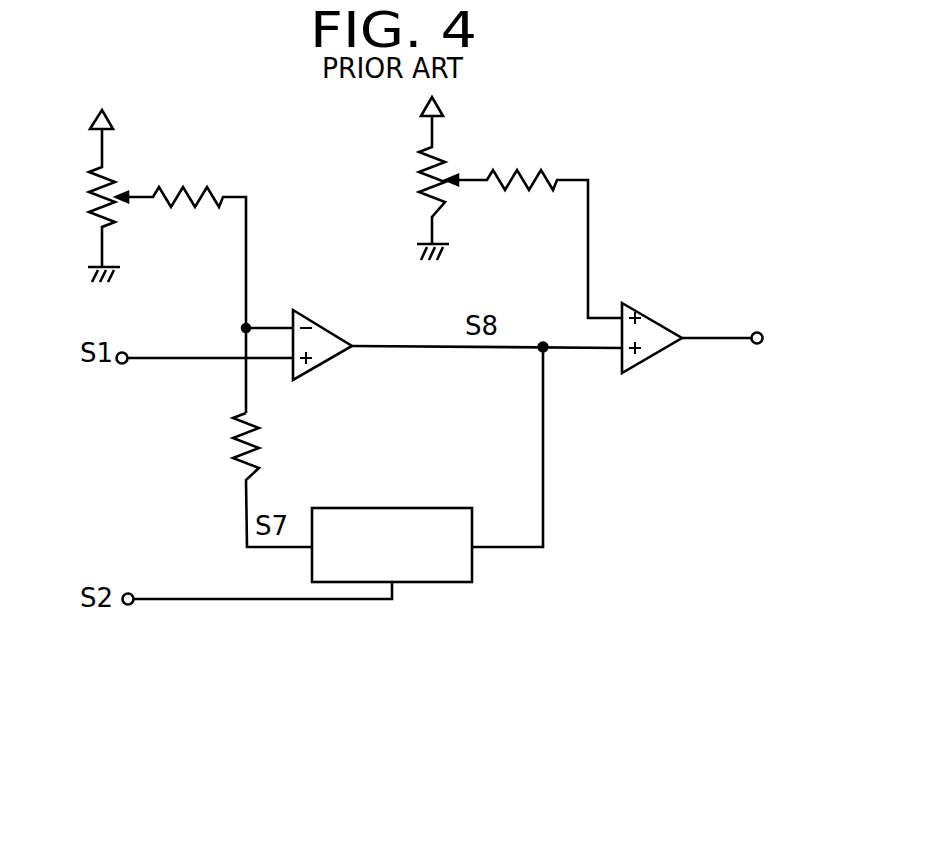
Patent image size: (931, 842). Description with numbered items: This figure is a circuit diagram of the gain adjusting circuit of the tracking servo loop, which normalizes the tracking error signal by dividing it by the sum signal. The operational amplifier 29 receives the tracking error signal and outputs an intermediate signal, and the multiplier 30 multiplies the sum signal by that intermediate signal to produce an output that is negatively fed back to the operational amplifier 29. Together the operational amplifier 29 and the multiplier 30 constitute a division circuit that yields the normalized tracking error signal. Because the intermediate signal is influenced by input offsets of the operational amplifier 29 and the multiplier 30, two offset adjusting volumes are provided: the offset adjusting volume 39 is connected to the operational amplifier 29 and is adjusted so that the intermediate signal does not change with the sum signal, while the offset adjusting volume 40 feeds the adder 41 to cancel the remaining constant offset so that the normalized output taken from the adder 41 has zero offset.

The operational amplifier 29 is at (327, 323).
The multiplier 30 is at (402, 508).
The offset adjusting volume 39 is at (113, 168).
The offset adjusting volume 40 is at (443, 173).
The adder 41 is at (657, 314).